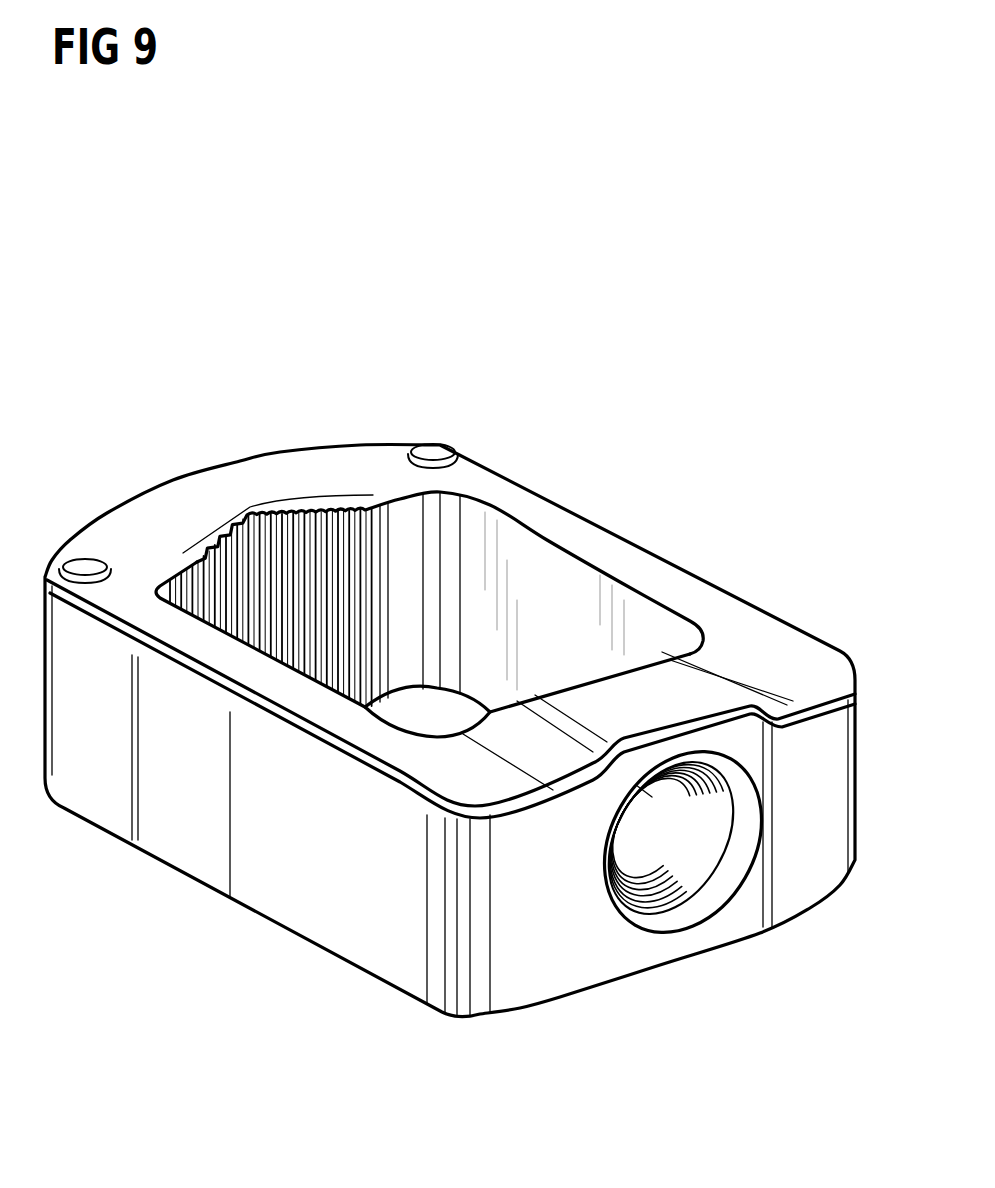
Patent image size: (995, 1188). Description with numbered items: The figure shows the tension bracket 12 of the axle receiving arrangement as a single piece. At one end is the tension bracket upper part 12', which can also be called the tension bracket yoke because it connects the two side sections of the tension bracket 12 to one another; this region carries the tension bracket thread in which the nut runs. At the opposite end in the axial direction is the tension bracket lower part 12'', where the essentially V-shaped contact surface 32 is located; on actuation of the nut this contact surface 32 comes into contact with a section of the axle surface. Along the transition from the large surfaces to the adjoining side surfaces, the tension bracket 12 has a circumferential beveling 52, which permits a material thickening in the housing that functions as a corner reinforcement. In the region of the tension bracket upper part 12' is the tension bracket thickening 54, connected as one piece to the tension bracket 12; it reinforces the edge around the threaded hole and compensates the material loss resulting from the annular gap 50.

The tension bracket 12 is at (450, 689).
The tension bracket upper part 12' is at (638, 685).
The tension bracket lower part 12'' is at (212, 643).
The V-shaped contact surface 32 is at (297, 550).
The annular gap 50 is at (697, 903).
The circumferential beveling 52 is at (180, 663).
The tension bracket thickening 54 is at (615, 693).